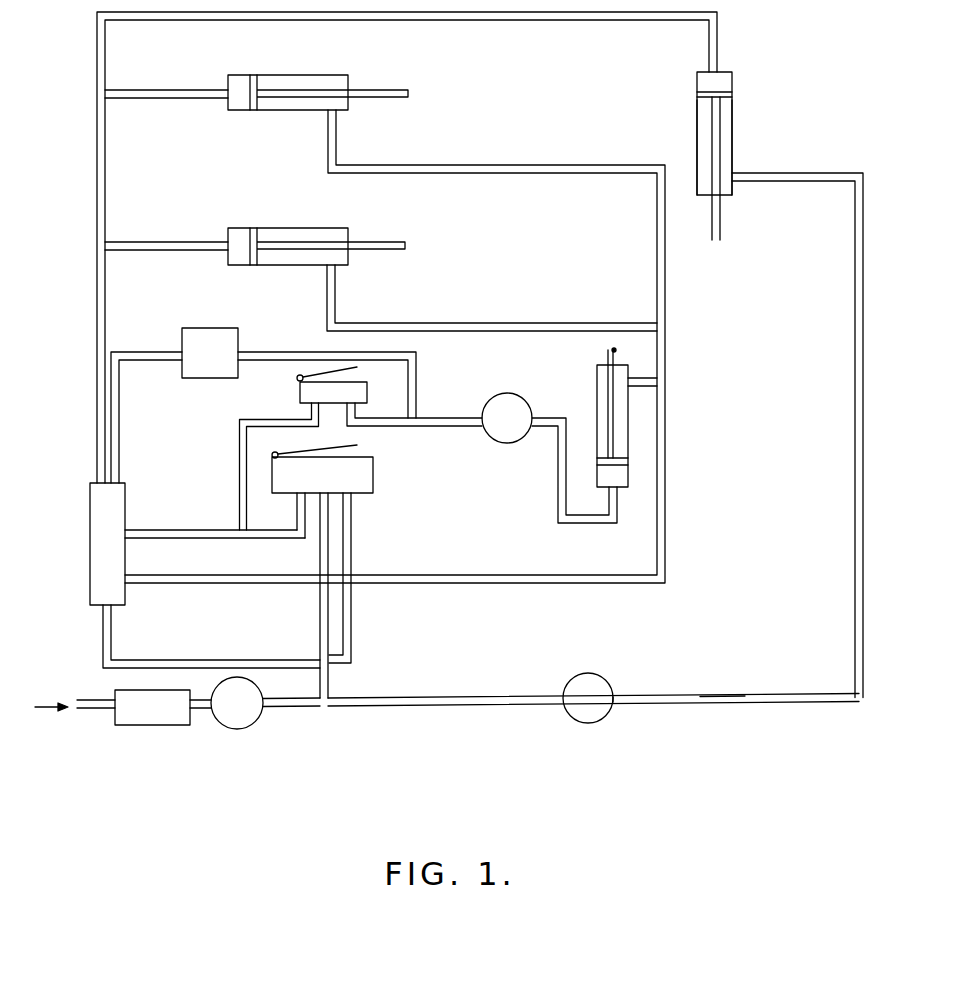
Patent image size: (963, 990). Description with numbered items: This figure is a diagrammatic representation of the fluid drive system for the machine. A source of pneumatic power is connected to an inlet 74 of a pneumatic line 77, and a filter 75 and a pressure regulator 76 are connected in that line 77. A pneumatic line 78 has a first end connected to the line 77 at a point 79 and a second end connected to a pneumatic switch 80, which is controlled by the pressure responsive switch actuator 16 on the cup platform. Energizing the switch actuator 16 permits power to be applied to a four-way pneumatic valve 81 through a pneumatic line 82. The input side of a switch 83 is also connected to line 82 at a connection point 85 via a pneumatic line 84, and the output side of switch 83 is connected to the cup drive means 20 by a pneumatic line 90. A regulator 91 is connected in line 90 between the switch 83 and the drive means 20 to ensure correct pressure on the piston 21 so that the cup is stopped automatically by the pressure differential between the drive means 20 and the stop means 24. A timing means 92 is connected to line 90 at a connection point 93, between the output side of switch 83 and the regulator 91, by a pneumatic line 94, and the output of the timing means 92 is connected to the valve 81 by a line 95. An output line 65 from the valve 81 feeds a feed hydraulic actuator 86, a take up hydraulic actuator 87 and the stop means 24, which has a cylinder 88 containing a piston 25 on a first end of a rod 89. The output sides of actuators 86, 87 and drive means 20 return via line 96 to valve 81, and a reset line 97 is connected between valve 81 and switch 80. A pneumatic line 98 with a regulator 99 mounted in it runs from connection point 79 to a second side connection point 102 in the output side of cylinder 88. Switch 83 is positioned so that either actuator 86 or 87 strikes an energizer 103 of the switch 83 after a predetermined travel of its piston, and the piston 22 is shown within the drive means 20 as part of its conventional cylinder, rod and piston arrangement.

The pressure responsive switch actuator 16 is at (313, 450).
The cup drive means 20 is at (639, 417).
The piston 21 is at (613, 423).
The piston 22 is at (628, 448).
The stop means 24 is at (712, 135).
The piston 25 is at (731, 121).
The output line 65 is at (97, 278).
The inlet 74 is at (78, 700).
The filter 75 is at (145, 717).
The pressure regulator 76 is at (235, 728).
The pneumatic line 77 is at (95, 710).
The pneumatic line 78 is at (320, 623).
The connection point 79 is at (332, 697).
The pneumatic switch 80 is at (348, 459).
The four-way pneumatic valve 81 is at (90, 515).
The pneumatic line 82 is at (167, 538).
The switch 83 is at (329, 381).
The pneumatic line 84 is at (240, 450).
The connection point 85 is at (242, 528).
The feed hydraulic actuator 86 is at (288, 80).
The take up hydraulic actuator 87 is at (300, 230).
The cylinder 88 is at (732, 137).
The rod 89 is at (718, 148).
The pneumatic line 90 is at (448, 418).
The regulator 91 is at (508, 397).
The timing means 92 is at (212, 337).
The connection point 93 is at (415, 413).
The pneumatic line 94 is at (275, 353).
The line 95 is at (122, 352).
The line 96 is at (455, 165).
The reset line 97 is at (163, 662).
The pneumatic line 98 is at (695, 693).
The regulator 99 is at (598, 676).
The second side connection point 102 is at (733, 173).
The energizer 103 is at (300, 375).